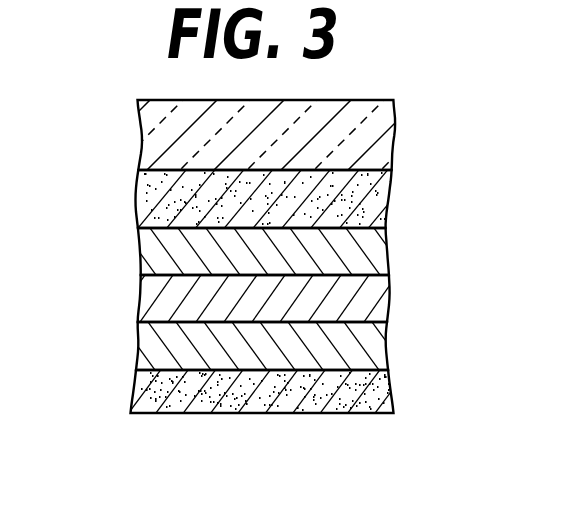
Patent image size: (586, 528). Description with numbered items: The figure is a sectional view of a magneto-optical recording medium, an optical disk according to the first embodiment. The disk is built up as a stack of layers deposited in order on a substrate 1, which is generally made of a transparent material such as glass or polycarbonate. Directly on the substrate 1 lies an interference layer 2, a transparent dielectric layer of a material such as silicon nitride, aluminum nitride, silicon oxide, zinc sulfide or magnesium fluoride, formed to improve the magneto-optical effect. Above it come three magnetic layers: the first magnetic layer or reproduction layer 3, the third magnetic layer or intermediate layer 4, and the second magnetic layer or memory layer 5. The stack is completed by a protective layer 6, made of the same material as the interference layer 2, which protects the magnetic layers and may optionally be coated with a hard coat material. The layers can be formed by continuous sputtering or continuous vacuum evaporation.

The substrate 1 is at (140, 136).
The interference layer 2 is at (137, 196).
The first magnetic layer (reproduction layer) 3 is at (139, 246).
The third magnetic layer (intermediate layer) 4 is at (141, 301).
The second magnetic layer (memory layer) 5 is at (139, 350).
The protective layer 6 is at (134, 400).